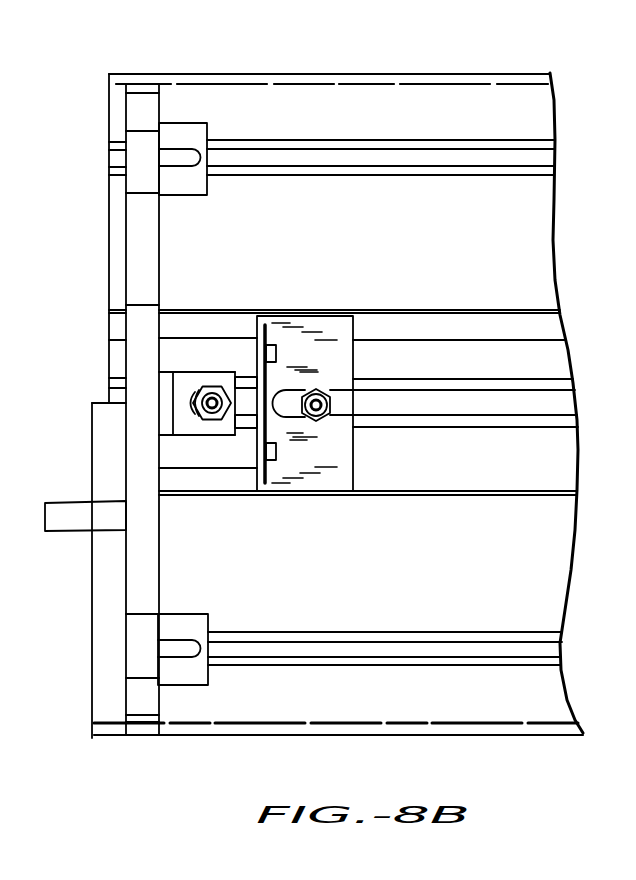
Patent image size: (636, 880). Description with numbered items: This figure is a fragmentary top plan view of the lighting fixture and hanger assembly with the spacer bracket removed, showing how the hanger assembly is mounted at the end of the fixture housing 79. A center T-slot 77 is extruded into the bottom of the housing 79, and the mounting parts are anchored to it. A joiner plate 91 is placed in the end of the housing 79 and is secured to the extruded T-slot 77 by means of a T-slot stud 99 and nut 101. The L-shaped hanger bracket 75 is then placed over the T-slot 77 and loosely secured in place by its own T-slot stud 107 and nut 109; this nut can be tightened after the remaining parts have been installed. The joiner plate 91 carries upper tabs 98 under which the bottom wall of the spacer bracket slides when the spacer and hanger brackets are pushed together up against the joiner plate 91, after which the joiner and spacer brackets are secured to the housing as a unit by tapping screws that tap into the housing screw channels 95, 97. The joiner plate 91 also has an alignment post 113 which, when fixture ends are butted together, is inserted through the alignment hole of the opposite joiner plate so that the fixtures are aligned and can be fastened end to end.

The L-shaped hanger bracket 75 is at (295, 345).
The center T-slot 77 is at (517, 387).
The fixture housing 79 is at (378, 72).
The joiner plate 91 is at (145, 251).
The housing screw channel 95 is at (387, 158).
The housing screw channel 97 is at (387, 650).
The upper tabs 98 is at (189, 131).
The T-slot stud 99 is at (207, 393).
The nut 101 is at (205, 440).
The T-slot stud 107 is at (316, 419).
The nut 109 is at (316, 389).
The alignment post 113 is at (68, 515).